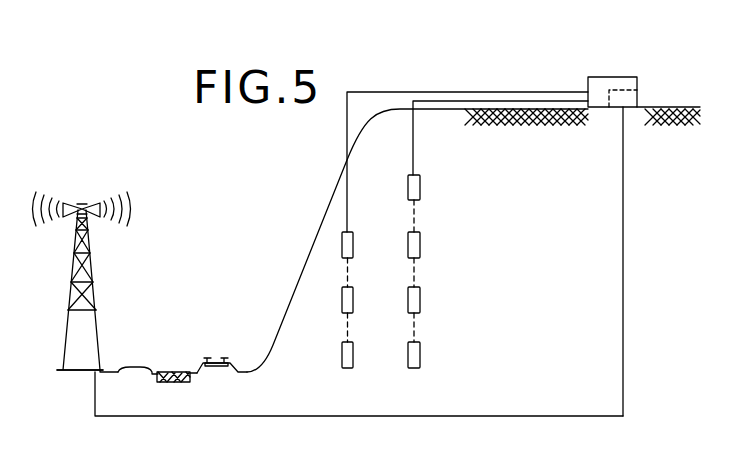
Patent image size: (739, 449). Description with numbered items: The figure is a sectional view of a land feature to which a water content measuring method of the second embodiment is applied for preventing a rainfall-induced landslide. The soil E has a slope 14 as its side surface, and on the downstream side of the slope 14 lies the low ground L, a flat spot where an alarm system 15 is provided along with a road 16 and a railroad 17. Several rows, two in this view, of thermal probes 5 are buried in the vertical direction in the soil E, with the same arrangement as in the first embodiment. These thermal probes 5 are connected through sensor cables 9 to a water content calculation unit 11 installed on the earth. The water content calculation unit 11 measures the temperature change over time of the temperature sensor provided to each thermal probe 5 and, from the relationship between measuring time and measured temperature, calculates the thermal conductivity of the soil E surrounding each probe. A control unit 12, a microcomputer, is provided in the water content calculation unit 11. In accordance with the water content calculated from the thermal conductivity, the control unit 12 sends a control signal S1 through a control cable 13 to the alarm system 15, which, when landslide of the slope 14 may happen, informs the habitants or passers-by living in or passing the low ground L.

The thermal probes 5 is at (353, 243).
The sensor cables 9 is at (498, 91).
The water content calculation unit 11 is at (600, 76).
The control unit 12 is at (628, 89).
The control cable 13 is at (622, 258).
The slope 14 is at (303, 268).
The alarm system 15 is at (92, 263).
The road 16 is at (133, 366).
The railroad 17 is at (214, 358).
The low ground L is at (170, 370).
The soil E is at (517, 165).
The control signal S1 is at (553, 415).